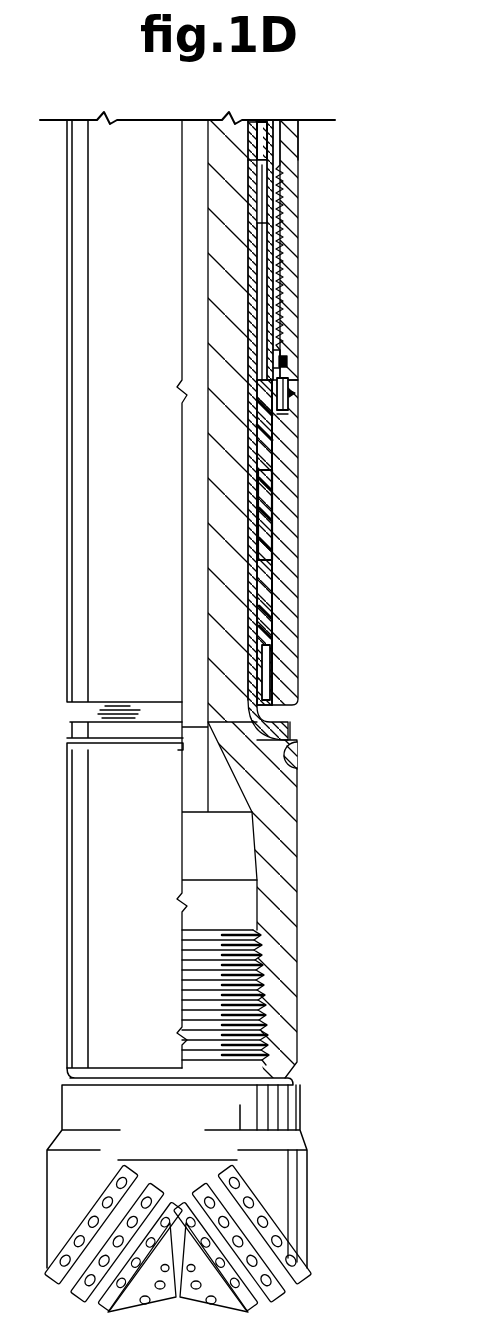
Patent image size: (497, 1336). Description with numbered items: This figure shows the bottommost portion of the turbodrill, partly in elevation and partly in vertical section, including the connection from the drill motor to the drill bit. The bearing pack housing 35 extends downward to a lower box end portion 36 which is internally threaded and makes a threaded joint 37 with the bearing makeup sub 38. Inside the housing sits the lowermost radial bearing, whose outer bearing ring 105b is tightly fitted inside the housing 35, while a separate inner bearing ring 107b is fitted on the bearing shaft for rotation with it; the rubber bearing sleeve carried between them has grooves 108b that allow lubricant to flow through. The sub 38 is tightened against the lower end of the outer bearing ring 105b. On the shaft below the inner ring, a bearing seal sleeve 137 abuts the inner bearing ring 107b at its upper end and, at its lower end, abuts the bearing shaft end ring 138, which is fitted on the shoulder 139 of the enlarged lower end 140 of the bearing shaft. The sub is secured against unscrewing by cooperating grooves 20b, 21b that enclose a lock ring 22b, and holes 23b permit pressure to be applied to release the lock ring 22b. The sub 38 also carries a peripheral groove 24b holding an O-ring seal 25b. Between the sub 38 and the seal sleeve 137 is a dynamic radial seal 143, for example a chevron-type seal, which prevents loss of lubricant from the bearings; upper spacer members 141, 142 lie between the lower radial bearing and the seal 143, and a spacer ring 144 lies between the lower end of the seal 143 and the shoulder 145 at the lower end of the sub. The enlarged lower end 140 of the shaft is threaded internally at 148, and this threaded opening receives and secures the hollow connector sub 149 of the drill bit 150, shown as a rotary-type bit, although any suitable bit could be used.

The groove 20b is at (290, 380).
The groove 21b is at (285, 405).
The lock ring 22b is at (288, 407).
The holes 23b is at (294, 395).
The peripheral groove 24b is at (276, 360).
The O-ring seal 25b is at (287, 362).
The bearing pack housing 35 is at (293, 133).
The lower box end portion 36 is at (298, 300).
The threaded joint 37 is at (283, 255).
The bearing makeup sub 38 is at (298, 580).
The outer bearing ring 105b is at (281, 157).
The inner bearing ring 107b is at (252, 142).
The grooves 108b is at (259, 140).
The bearing seal sleeve 137 is at (250, 592).
The bearing shaft end ring 138 is at (284, 723).
The shoulder 139 is at (290, 768).
The enlarged lower end of bearing shaft 140 is at (288, 870).
The upper spacer member 141 is at (268, 340).
The upper spacer member 142 is at (262, 190).
The dynamic radial seal 143 is at (265, 488).
The spacer ring 144 is at (265, 625).
The shoulder 145 is at (270, 660).
The internal threads 148 is at (262, 1015).
The hollow connector sub 149 is at (200, 978).
The drill bit 150 is at (302, 1190).